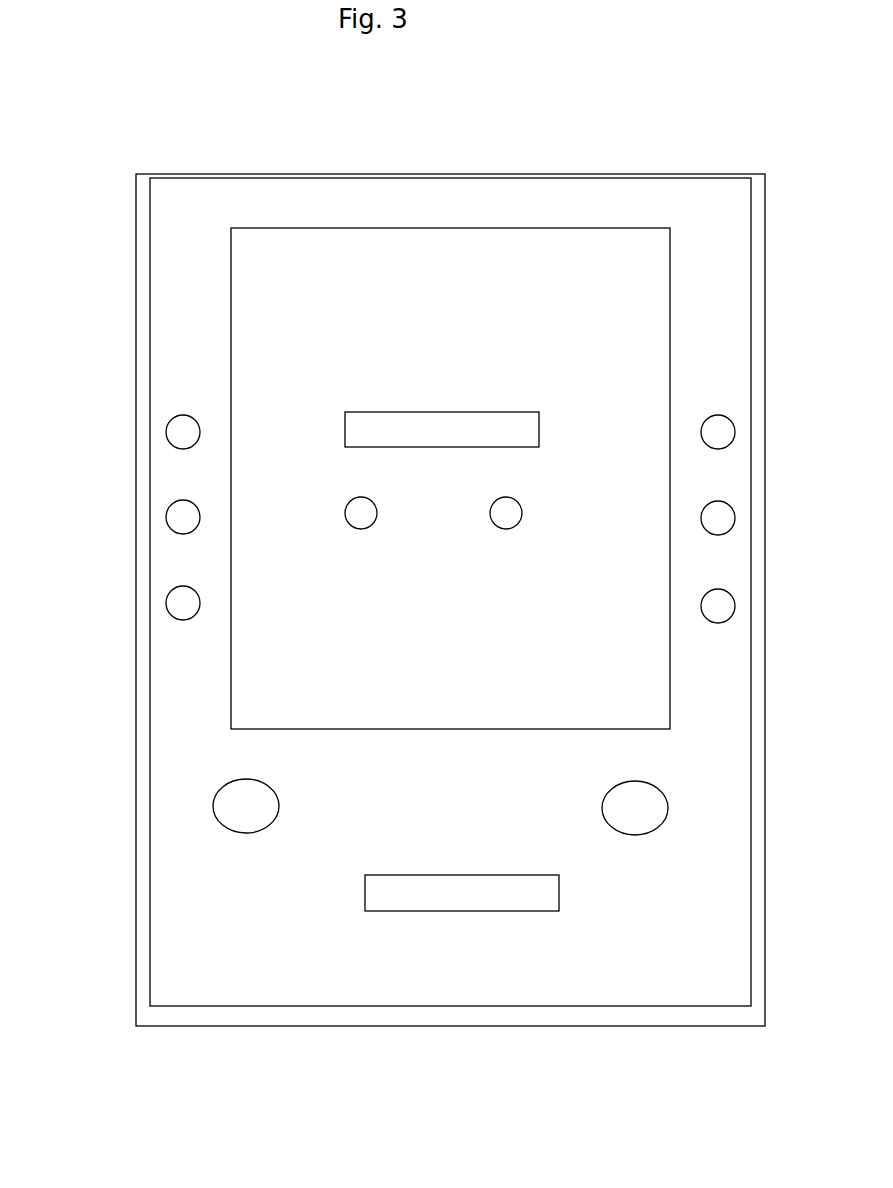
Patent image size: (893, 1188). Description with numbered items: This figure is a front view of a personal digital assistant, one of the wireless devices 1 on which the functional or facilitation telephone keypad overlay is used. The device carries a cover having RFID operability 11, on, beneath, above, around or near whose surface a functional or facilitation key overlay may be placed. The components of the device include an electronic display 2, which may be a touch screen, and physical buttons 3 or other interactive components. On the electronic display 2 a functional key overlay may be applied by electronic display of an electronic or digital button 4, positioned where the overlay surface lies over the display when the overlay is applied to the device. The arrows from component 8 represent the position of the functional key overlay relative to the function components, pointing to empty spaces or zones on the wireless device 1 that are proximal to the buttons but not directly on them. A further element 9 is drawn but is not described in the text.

The wireless device 1 is at (214, 161).
The electronic display 2 is at (416, 226).
The physical buttons 3 is at (705, 449).
The electronic or digital button 4 is at (437, 411).
The component indicating empty spaces or zones 8 is at (640, 930).
The lower channel element 9 is at (455, 913).
The cover having RFID operability 11 is at (135, 267).